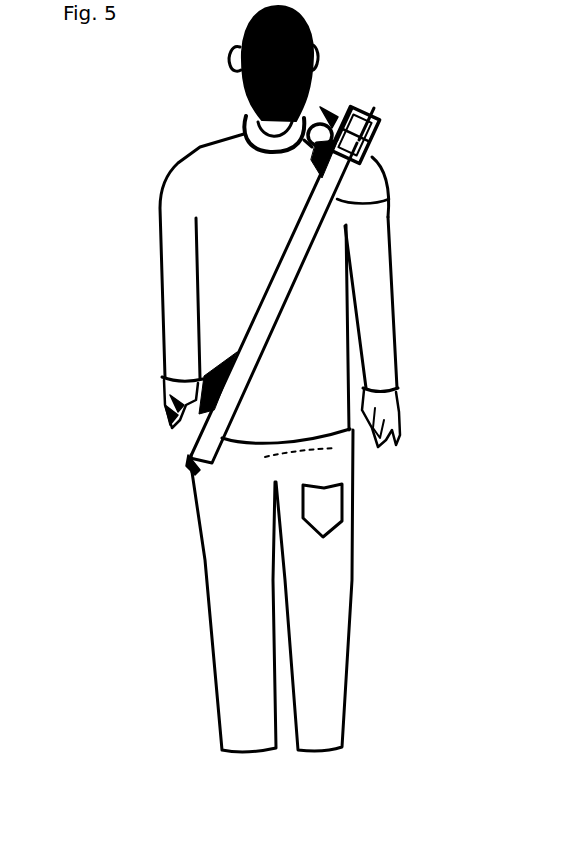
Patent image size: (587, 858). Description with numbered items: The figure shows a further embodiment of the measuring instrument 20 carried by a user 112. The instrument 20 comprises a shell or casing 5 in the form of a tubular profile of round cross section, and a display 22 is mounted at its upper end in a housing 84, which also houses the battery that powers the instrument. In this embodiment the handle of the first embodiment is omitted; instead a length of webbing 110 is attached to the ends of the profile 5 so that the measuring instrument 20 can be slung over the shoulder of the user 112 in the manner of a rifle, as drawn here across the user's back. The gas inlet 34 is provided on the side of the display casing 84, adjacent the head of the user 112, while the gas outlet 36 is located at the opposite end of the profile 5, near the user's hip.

The shell or casing 5 is at (280, 276).
The measuring instrument 20 is at (282, 308).
The display 22 is at (313, 147).
The gas inlet nozzle 34 is at (323, 106).
The gas outlet 36 is at (190, 476).
The housing 84 is at (378, 137).
The webbing 110 is at (389, 199).
The user 112 is at (395, 334).